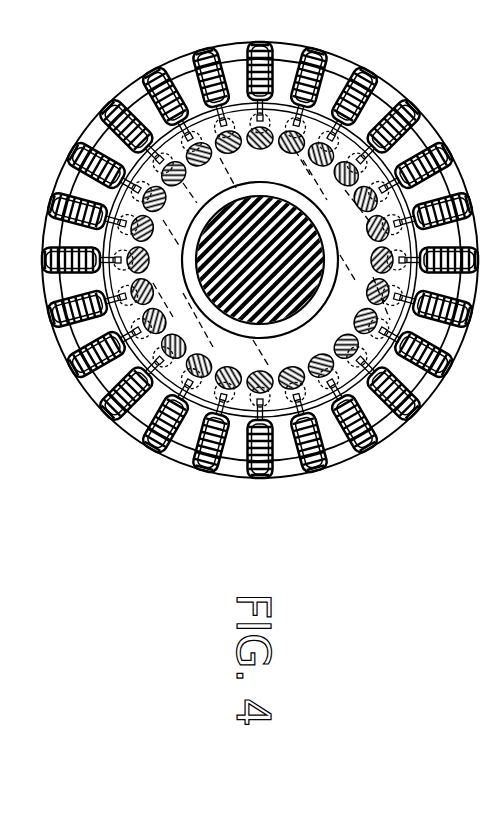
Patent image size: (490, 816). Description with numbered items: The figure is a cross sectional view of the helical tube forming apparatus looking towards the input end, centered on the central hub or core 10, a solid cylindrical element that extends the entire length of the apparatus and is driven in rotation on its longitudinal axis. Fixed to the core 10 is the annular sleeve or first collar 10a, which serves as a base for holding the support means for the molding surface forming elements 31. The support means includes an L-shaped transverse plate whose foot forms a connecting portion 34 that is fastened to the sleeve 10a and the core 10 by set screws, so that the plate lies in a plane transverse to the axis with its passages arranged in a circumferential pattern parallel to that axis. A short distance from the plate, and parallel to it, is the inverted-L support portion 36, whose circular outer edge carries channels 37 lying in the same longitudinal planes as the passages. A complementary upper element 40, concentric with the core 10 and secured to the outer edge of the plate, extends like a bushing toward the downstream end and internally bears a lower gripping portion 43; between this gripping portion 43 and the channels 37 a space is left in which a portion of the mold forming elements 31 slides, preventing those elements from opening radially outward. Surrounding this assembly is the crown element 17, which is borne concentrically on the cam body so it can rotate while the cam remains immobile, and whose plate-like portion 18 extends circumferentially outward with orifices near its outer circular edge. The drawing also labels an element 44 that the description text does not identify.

The central core 10 is at (304, 236).
The annular sleeve 10a is at (334, 291).
The crown element 17 is at (381, 408).
The crown portion 18 is at (432, 128).
The mold forming elements 31 is at (312, 116).
The connecting portion 34 is at (309, 348).
The support portion 36 is at (297, 165).
The channels 37 is at (347, 340).
The complementary upper element 40 is at (322, 410).
The lower gripping portion 43 is at (217, 338).
The pole shoe 44 is at (202, 167).